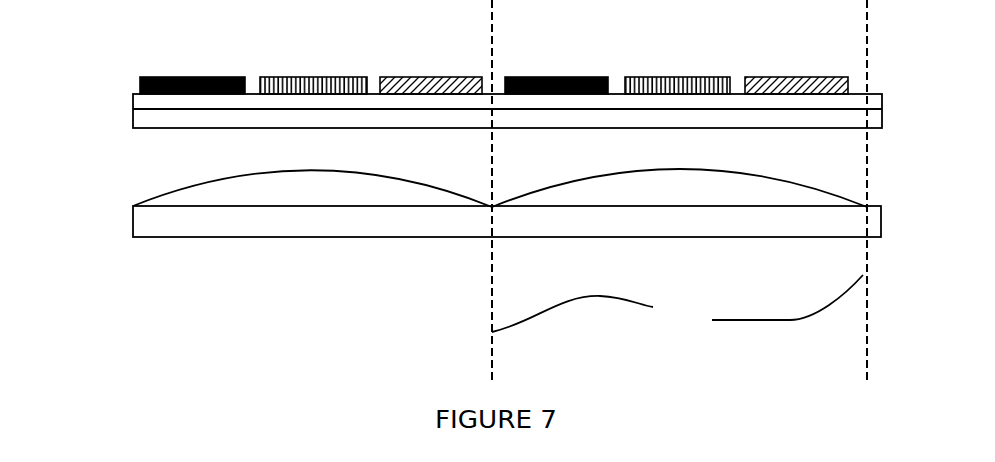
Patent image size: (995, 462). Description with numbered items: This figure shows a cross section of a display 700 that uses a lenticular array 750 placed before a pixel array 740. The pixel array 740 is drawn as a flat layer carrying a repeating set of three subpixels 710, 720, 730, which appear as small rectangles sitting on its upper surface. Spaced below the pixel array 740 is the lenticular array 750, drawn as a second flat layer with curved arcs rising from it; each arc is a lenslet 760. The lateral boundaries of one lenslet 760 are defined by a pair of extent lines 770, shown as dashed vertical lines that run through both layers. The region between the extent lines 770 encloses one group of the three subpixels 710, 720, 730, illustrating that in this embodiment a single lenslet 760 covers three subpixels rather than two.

The display 700 is at (156, 311).
The subpixel 710 is at (182, 79).
The subpixel 720 is at (358, 80).
The subpixel 730 is at (405, 80).
The pixel array 740 is at (133, 97).
The lenticular array 750 is at (133, 220).
The lenslet 760 is at (248, 190).
The extent lines 770 is at (677, 303).